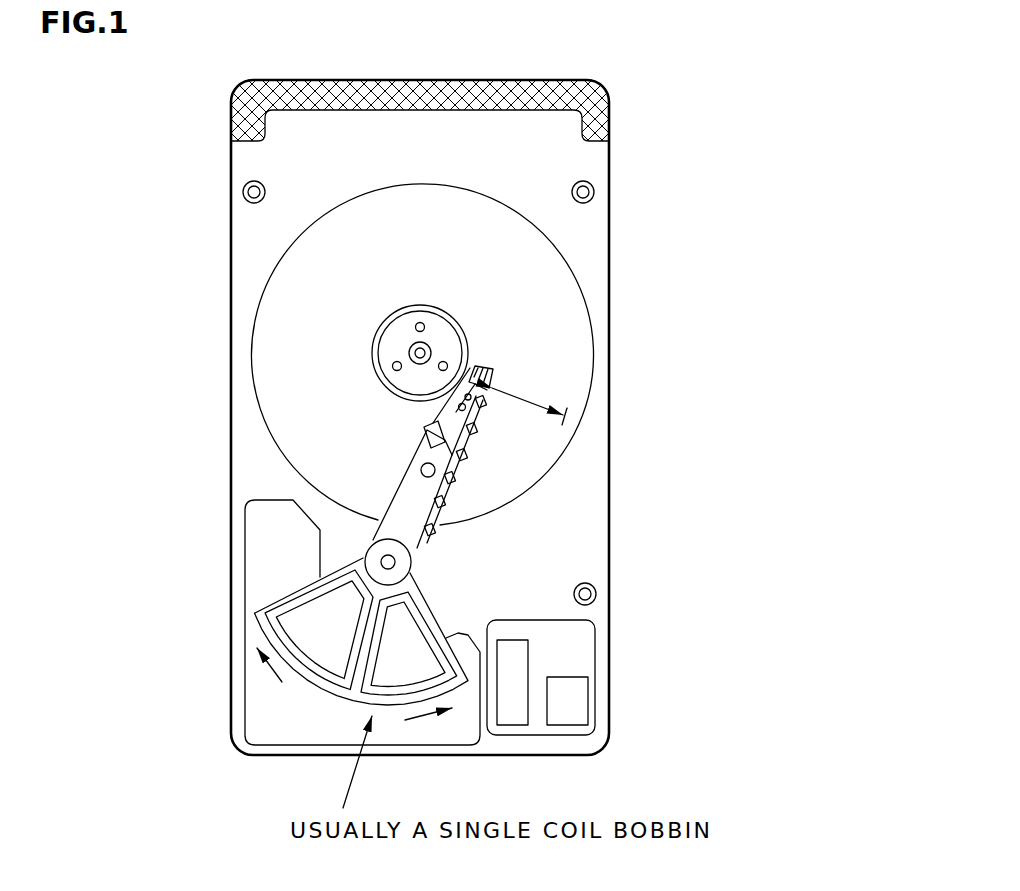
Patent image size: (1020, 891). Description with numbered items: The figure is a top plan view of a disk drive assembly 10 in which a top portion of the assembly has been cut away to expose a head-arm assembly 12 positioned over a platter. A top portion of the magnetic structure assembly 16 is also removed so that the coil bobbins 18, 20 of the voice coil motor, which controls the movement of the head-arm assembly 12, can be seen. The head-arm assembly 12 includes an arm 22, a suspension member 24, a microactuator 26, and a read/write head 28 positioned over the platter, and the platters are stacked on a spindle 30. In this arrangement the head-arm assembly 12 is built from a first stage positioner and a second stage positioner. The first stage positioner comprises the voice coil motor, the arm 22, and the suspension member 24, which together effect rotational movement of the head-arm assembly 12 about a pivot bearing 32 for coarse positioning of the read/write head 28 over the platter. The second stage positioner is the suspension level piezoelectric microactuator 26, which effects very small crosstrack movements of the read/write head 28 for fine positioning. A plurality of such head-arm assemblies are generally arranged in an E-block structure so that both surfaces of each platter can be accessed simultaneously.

The disk drive assembly 10 is at (652, 113).
The head-arm assembly 12 is at (460, 426).
The magnetic structure assembly 16 is at (317, 639).
The coil bobbin 18 is at (425, 618).
The coil bobbin 20 is at (322, 673).
The arm 22 is at (405, 443).
The suspension member 24 is at (493, 398).
The microactuator 26 is at (479, 362).
The read/write head 28 is at (502, 368).
The spindle 30 is at (383, 323).
The pivot bearing 32 is at (395, 563).